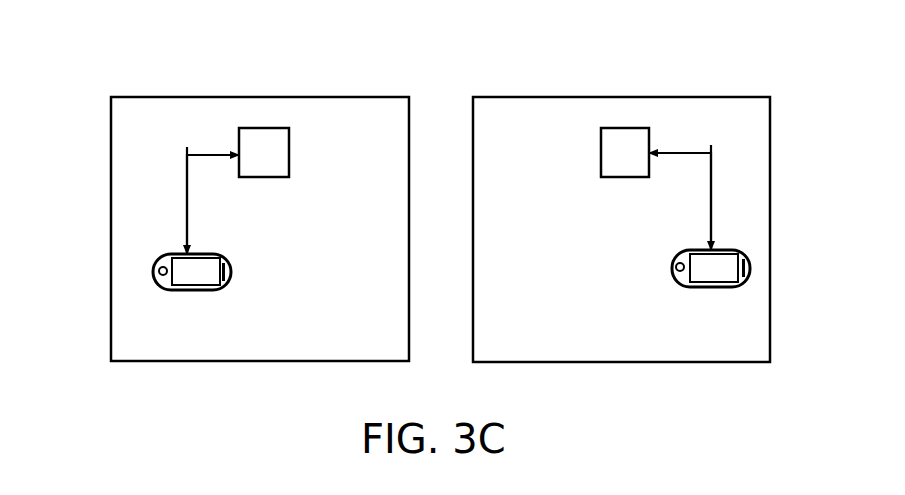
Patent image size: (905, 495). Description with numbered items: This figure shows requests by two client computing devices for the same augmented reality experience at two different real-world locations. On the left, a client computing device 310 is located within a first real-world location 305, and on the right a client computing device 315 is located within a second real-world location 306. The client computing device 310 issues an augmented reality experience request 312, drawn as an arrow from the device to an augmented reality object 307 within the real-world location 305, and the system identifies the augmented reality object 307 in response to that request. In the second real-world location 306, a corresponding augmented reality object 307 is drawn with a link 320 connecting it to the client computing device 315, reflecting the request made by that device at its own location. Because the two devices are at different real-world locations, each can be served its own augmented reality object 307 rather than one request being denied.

The real-world location 305 is at (137, 96).
The real-world location 306 is at (498, 96).
The augmented reality object 307 is at (266, 128).
The augmented reality experience request 312 is at (187, 203).
The communication link from hub to device 320 is at (711, 193).
The client computing device 310 is at (160, 287).
The client computing device 315 is at (750, 269).